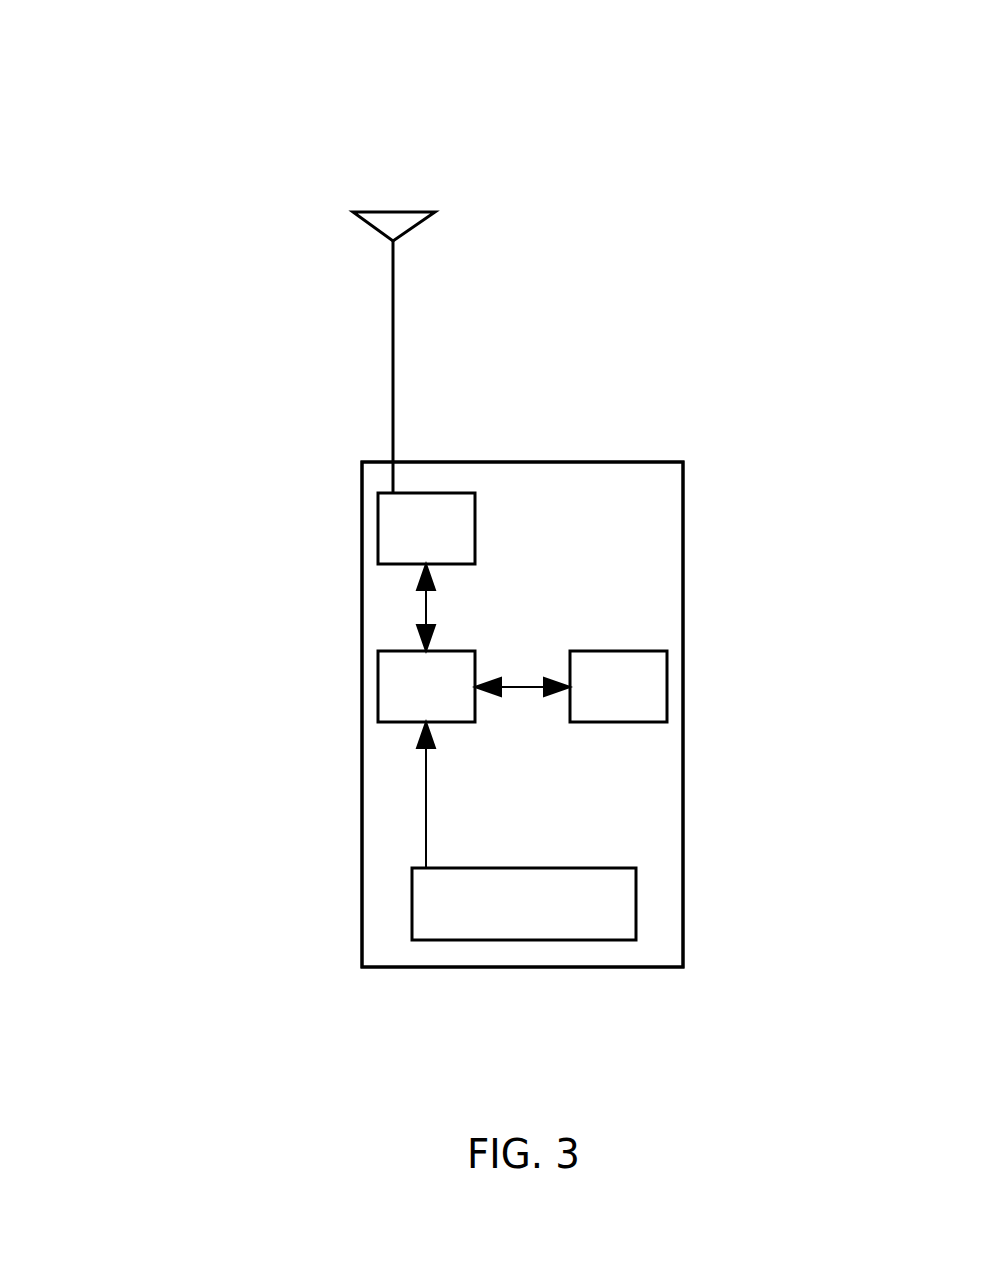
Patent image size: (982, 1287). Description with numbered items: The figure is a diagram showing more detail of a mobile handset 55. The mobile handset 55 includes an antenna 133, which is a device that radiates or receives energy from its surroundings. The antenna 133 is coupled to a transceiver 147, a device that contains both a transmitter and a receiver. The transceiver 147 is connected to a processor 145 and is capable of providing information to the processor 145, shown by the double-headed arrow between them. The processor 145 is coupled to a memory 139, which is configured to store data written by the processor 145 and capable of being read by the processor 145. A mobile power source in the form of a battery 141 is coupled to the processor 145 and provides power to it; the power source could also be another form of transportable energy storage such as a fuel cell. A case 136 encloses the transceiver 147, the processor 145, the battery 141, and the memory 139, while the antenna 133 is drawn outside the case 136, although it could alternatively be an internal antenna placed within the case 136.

The mobile handset 55 is at (290, 122).
The antenna 133 is at (393, 378).
The case 136 is at (683, 548).
The transceiver 147 is at (378, 528).
The processor 145 is at (378, 686).
The memory 139 is at (667, 685).
The battery 141 is at (636, 902).